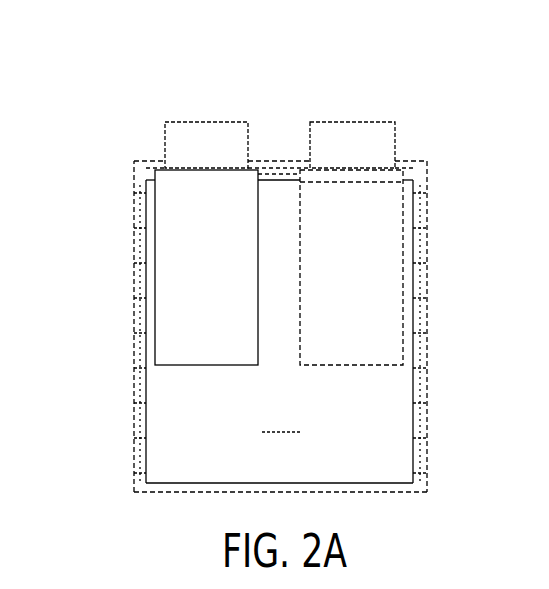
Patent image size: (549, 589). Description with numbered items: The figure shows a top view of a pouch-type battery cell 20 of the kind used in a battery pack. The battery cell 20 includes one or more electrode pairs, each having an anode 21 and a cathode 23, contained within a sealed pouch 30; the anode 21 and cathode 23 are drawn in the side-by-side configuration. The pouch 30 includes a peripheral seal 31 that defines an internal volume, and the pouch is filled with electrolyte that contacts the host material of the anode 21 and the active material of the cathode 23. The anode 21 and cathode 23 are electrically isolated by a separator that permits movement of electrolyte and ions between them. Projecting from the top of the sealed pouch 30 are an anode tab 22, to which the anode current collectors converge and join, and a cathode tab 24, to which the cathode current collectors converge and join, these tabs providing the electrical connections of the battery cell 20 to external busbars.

The battery cell 20 is at (131, 66).
The anode 21 is at (225, 278).
The anode tab 22 is at (230, 128).
The cathode 23 is at (370, 278).
The cathode tab 24 is at (378, 130).
The sealed pouch 30 is at (143, 160).
The peripheral seal 31 is at (415, 338).